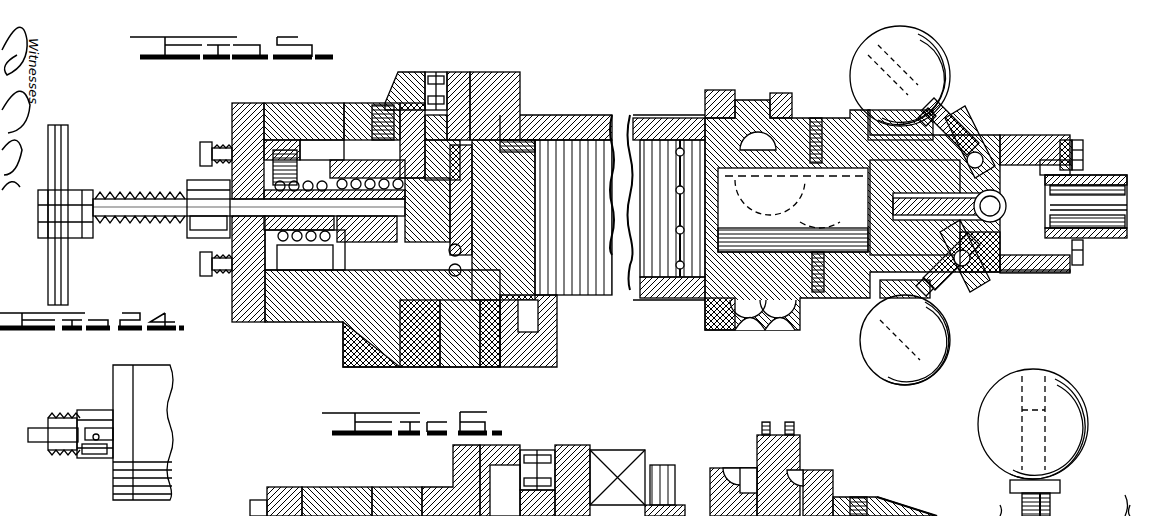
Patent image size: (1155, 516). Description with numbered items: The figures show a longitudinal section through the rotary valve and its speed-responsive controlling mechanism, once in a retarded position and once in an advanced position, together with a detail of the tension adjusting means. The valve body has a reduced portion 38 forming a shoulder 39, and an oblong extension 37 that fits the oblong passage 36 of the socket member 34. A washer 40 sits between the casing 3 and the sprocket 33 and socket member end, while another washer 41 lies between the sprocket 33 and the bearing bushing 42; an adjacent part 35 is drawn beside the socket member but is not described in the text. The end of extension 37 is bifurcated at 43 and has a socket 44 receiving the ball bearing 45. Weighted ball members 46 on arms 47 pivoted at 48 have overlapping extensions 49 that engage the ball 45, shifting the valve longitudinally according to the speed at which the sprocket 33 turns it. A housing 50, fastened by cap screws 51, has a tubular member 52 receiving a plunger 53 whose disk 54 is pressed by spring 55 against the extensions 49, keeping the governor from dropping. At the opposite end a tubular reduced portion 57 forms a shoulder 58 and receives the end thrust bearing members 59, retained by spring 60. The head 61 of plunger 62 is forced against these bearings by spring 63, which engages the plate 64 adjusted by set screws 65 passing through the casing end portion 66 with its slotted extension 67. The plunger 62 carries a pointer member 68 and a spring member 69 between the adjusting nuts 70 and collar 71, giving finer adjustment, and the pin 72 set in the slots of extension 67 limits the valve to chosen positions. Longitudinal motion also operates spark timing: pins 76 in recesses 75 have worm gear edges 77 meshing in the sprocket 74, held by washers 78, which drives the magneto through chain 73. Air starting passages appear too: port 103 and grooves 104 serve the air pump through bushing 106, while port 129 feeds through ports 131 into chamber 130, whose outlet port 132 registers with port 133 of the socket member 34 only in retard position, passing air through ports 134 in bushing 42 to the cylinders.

In FIG. 5, the casing 3 is at (630, 290).
In FIG. 5, the sprocket 33 is at (722, 328).
In FIG. 6, the sprocket 33 is at (802, 446).
In FIG. 5, the socket member 34 is at (815, 128).
In FIG. 5, the ball mounting boss 35 is at (905, 295).
In FIG. 6, the ball mounting boss 35 is at (1000, 515).
In FIG. 5, the oblong passage 36 is at (978, 138).
In FIG. 5, the extension 37 is at (1000, 170).
In FIG. 6, the extension 37 is at (950, 514).
In FIG. 5, the reduced portion 38 is at (840, 178).
In FIG. 5, the shoulder 39 is at (715, 92).
In FIG. 6, the shoulder 39 is at (693, 482).
In FIG. 5, the washer 40 is at (760, 100).
In FIG. 6, the washer 40 is at (732, 468).
In FIG. 5, the washer 41 is at (790, 110).
In FIG. 6, the washer 41 is at (815, 476).
In FIG. 5, the bearing bushing 42 is at (900, 110).
In FIG. 6, the bearing bushing 42 is at (864, 498).
In FIG. 5, the split or bifurcated end 43 is at (1020, 272).
In FIG. 5, the socket 44 is at (1040, 138).
In FIG. 5, the ball bearing 45 is at (1058, 158).
In FIG. 5, the weighted ball members 46 is at (948, 56).
In FIG. 6, the weighted ball members 46 is at (1080, 402).
In FIG. 5, the arms 47 is at (965, 118).
In FIG. 6, the arms 47 is at (1060, 492).
In FIG. 5, the pivot 48 is at (965, 282).
In FIG. 6, the pivot 48 is at (1052, 515).
In FIG. 5, the overlapping extensions 49 is at (1074, 146).
In FIG. 6, the overlapping extensions 49 is at (1116, 509).
In FIG. 5, the housing 50 is at (1060, 276).
In FIG. 5, the cap screws 51 is at (1078, 272).
In FIG. 5, the tubular member 52 is at (1085, 262).
In FIG. 5, the plunger 53 is at (1095, 176).
In FIG. 6, the plunger 53 is at (1130, 500).
In FIG. 5, the disk or bearing portion 54 is at (1085, 158).
In FIG. 5, the spring 55 is at (1100, 232).
In FIG. 5, the reduced portion 57 is at (555, 298).
In FIG. 5, the shoulder 58 is at (590, 122).
In FIG. 6, the shoulder 58 is at (615, 482).
In FIG. 5, the end thrust bearing members 59 is at (348, 352).
In FIG. 5, the retaining spring 60 is at (405, 110).
In FIG. 5, the head 61 is at (368, 197).
In FIG. 5, the plunger 62 is at (249, 208).
In FIG. 24, the plunger 62 is at (42, 444).
In FIG. 5, the spring 63 is at (365, 125).
In FIG. 6, the spring 63 is at (375, 492).
In FIG. 5, the washer or plate 64 is at (282, 125).
In FIG. 6, the washer or plate 64 is at (320, 490).
In FIG. 5, the set screws 65 is at (215, 142).
In FIG. 6, the set screws 65 is at (255, 515).
In FIG. 5, the end portion 66 is at (240, 110).
In FIG. 24, the end portion 66 is at (138, 385).
In FIG. 6, the end portion 66 is at (277, 486).
In FIG. 5, the extension 67 is at (195, 230).
In FIG. 24, the extension 67 is at (95, 415).
In FIG. 5, the pointer member 68 is at (62, 130).
In FIG. 5, the spring member 69 is at (130, 192).
In FIG. 24, the spring member 69 is at (55, 425).
In FIG. 5, the adjusting nuts 70 is at (85, 238).
In FIG. 5, the collar 71 is at (195, 180).
In FIG. 5, the pin 72 is at (205, 266).
In FIG. 24, the pin 72 is at (92, 458).
In FIG. 5, the chain 73 is at (440, 76).
In FIG. 6, the chain 73 is at (537, 452).
In FIG. 5, the sprocket 74 is at (462, 80).
In FIG. 5, the recesses 75 is at (545, 150).
In FIG. 5, the pins or lugs 76 is at (440, 362).
In FIG. 5, the gear edges 77 is at (490, 80).
In FIG. 6, the gear edges 77 is at (500, 450).
In FIG. 5, the washers 78 is at (412, 75).
In FIG. 6, the washers 78 is at (577, 450).
In FIG. 5, the port 103 is at (405, 360).
In FIG. 5, the valve ports or grooves 104 is at (345, 320).
In FIG. 5, the bushing 106 is at (268, 290).
In FIG. 6, the bushing 106 is at (445, 488).
In FIG. 5, the port 129 is at (657, 122).
In FIG. 6, the port 129 is at (660, 505).
In FIG. 5, the chamber 130 is at (785, 190).
In FIG. 5, the ports 131 is at (690, 178).
In FIG. 5, the outlet port 132 is at (800, 244).
In FIG. 5, the port 133 is at (770, 330).
In FIG. 5, the ports 134 is at (818, 290).